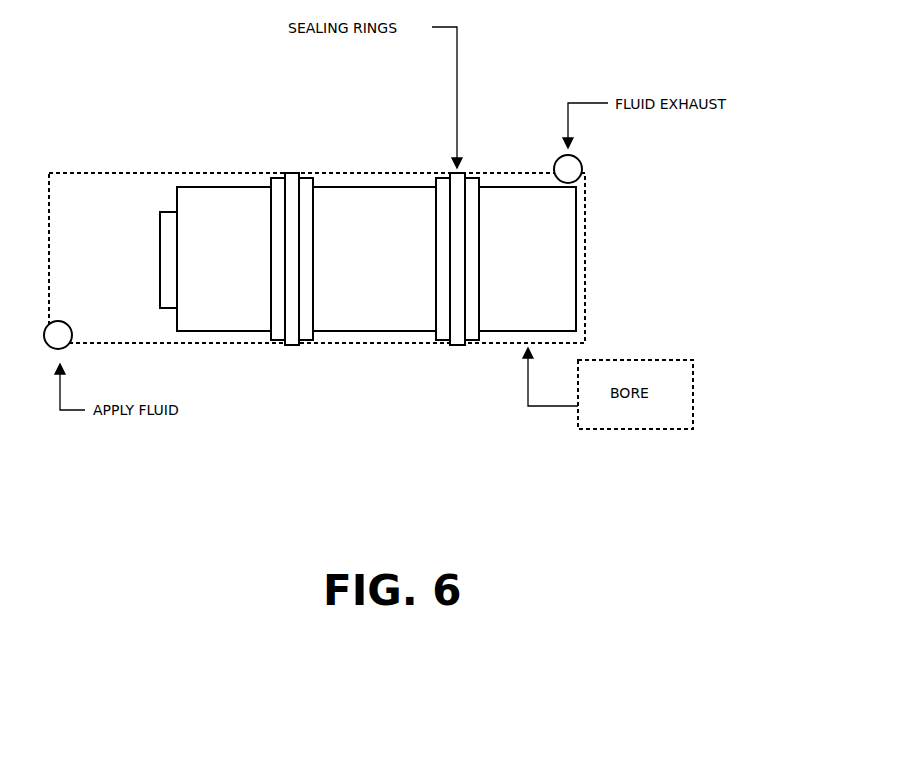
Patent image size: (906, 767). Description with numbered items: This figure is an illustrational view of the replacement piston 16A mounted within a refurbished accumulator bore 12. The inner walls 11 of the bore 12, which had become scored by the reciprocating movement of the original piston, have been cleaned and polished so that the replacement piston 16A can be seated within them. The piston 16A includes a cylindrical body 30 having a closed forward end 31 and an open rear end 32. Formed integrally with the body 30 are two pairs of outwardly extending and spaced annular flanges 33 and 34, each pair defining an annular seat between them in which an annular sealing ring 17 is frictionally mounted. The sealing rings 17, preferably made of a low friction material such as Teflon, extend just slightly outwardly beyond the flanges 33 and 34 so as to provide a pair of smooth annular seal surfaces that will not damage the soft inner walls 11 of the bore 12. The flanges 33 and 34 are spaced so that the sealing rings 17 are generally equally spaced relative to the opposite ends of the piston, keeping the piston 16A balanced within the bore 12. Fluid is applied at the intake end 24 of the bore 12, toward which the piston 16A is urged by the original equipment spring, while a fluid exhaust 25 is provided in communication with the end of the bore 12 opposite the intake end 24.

The inner walls 11 is at (112, 175).
The accumulator bore 12 is at (116, 314).
The replacement piston 16A is at (225, 197).
The annular sealing rings 17 is at (293, 172).
The intake end 24 is at (55, 350).
The fluid exhaust 25 is at (582, 165).
The cylindrical body 30 is at (373, 200).
The closed forward end 31 is at (160, 244).
The open rear end 32 is at (583, 259).
The annular flange 33 is at (277, 275).
The annular flange 34 is at (310, 268).